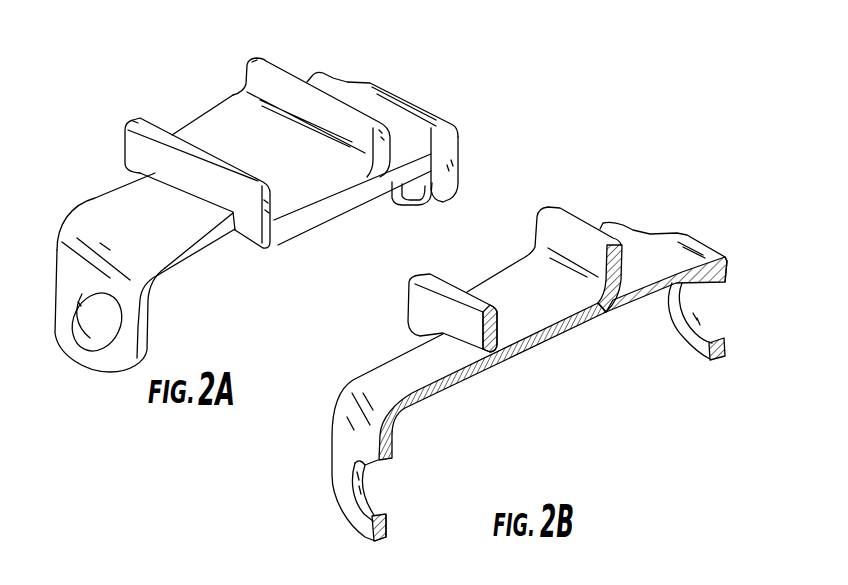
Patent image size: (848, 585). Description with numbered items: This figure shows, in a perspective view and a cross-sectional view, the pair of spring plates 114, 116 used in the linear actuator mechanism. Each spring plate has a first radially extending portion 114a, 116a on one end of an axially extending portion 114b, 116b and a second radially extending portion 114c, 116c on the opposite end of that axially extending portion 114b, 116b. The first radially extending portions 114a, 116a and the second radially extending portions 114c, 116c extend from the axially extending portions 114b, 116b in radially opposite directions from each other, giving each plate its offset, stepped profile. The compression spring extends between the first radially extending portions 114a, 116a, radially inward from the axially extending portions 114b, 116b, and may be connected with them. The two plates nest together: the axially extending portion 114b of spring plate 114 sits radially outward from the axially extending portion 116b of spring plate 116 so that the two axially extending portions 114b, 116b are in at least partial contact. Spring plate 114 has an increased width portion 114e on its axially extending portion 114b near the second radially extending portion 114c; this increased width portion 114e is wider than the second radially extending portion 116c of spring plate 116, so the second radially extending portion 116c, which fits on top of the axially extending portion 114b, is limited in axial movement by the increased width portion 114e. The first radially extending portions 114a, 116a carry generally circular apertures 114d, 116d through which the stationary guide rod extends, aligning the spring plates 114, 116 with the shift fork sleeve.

In FIG. 2A, the spring plate 114 is at (62, 242).
In FIG. 2B, the spring plate 114 is at (415, 396).
In FIG. 2A, the first radially extending portion 114a is at (140, 325).
In FIG. 2A, the axially extending portion 114b is at (97, 201).
In FIG. 2A, the second radially extending portion 114c is at (268, 66).
In FIG. 2A, the aperture 114d is at (82, 334).
In FIG. 2B, the aperture 114d is at (375, 505).
In FIG. 2A, the increased width portion 114e is at (213, 124).
In FIG. 2A, the spring plate 116 is at (375, 83).
In FIG. 2B, the spring plate 116 is at (679, 234).
In FIG. 2A, the first radially extending portion 116a is at (460, 163).
In FIG. 2A, the axially extending portion 116b is at (400, 205).
In FIG. 2A, the second radially extending portion 116c is at (148, 118).
In FIG. 2B, the aperture 116d is at (704, 311).